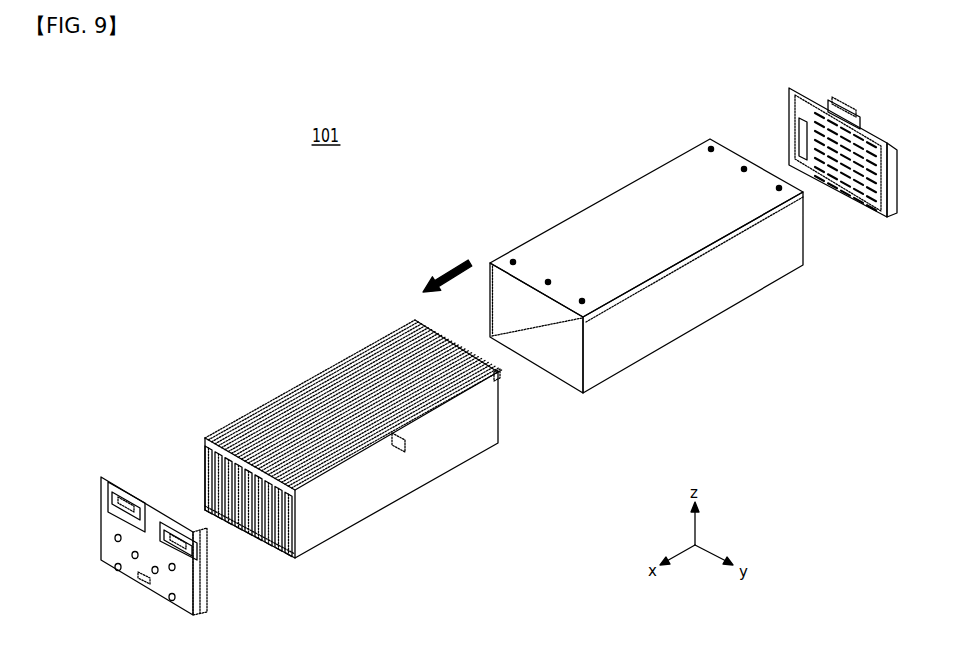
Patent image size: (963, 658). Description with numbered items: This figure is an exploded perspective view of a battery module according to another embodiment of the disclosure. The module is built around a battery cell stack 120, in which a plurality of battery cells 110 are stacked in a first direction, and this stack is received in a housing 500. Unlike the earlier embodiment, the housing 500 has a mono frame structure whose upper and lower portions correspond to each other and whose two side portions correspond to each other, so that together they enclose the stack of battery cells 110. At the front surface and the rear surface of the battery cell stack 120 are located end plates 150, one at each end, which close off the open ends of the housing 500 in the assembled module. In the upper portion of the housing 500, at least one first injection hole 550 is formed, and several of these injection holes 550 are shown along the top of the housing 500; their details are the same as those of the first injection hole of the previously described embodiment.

The battery cells 110 is at (400, 480).
The battery cell stack 120 is at (274, 416).
The end plates 150 is at (813, 100).
The housing 500 is at (711, 300).
The first injection hole 550 is at (582, 298).